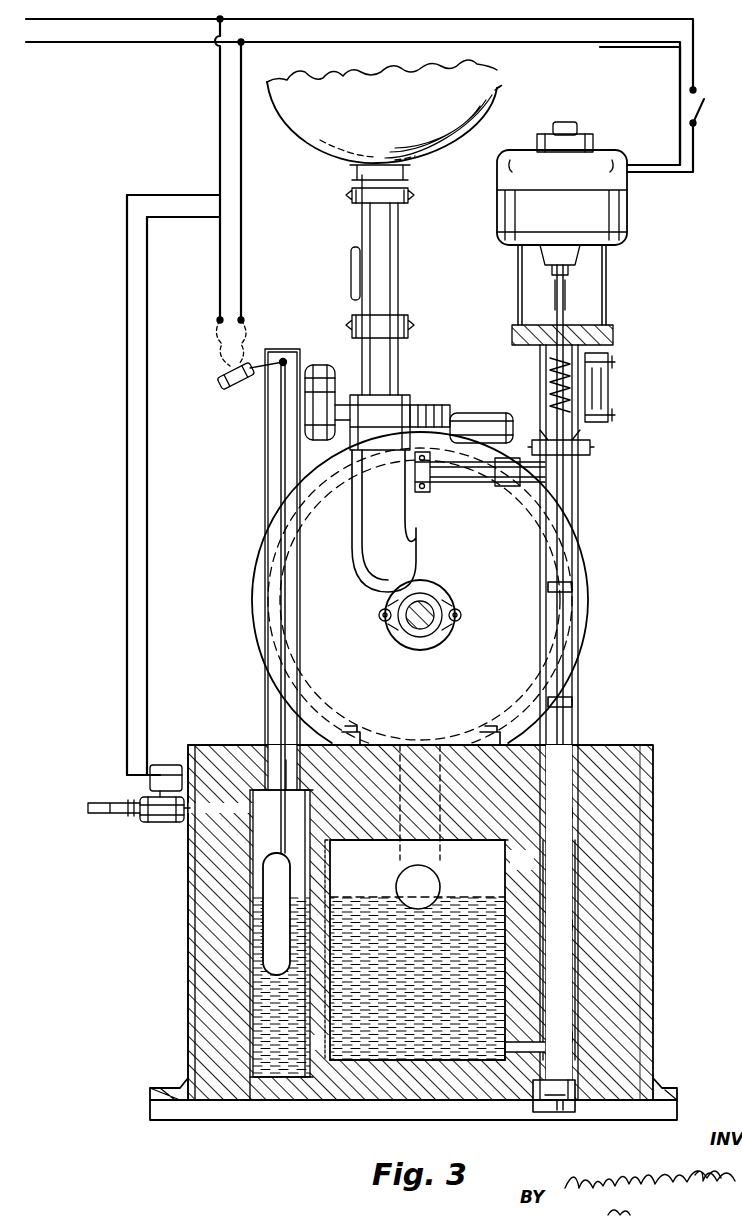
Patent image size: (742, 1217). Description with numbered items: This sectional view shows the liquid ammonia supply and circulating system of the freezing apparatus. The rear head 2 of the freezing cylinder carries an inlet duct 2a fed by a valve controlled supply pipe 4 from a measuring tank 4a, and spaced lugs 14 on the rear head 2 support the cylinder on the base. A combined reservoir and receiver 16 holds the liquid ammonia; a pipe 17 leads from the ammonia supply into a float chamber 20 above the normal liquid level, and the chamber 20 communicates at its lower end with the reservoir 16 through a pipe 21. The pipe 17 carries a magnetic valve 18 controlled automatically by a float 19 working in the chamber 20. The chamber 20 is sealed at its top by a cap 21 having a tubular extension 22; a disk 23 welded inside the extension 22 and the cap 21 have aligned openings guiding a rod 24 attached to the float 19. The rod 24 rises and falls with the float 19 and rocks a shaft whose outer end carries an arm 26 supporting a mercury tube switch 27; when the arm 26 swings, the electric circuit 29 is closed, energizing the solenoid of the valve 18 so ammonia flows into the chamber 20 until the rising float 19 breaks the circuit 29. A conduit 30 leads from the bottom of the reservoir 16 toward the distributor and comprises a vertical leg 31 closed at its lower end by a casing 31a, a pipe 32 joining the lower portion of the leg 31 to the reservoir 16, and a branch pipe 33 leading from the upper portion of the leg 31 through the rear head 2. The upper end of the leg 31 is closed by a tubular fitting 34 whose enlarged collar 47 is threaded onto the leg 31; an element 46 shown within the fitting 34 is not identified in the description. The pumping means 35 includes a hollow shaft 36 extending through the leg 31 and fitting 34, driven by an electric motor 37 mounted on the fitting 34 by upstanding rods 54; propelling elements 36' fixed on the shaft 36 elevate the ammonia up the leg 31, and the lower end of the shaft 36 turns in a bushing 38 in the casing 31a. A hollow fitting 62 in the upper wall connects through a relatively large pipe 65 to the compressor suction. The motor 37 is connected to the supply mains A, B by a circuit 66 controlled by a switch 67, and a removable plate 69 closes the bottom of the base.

The supply main B is at (71, 17).
The supply main A is at (60, 50).
The measuring tank 4a is at (324, 140).
The circuit 66 is at (640, 106).
The switch 67 is at (675, 130).
The electric motor 37 is at (630, 206).
The up-standing rods 54 is at (517, 291).
The arm 26 is at (243, 350).
The mercury tube switch 27 is at (228, 382).
The supply pipe 4 is at (330, 406).
The hollow fitting 62 is at (440, 405).
The pipe 65 is at (482, 413).
The tubular fitting 34 is at (563, 712).
The spring 46 is at (547, 397).
The enlarged collar 47 is at (592, 445).
The branch pipe 33 is at (488, 482).
The inlet duct 2a is at (382, 565).
The rear head 2 is at (390, 657).
The electric circuit 29 is at (147, 537).
The conduit 30 is at (597, 706).
The tubular extension 22 is at (278, 688).
The rod 24 is at (268, 702).
The cap 21 is at (250, 738).
The spaced lugs 14 is at (444, 728).
The pipe 17 is at (110, 816).
The valve 18 is at (156, 822).
The disk 23 is at (364, 796).
The propelling elements 36' is at (619, 809).
The vertical leg 31 is at (578, 822).
The shaft 36 is at (619, 687).
The float 19 is at (270, 878).
The pumping means 35 is at (420, 922).
The float chamber 20 is at (237, 996).
The combined reservoir and receiver 16 is at (372, 1098).
The removable plate 69 is at (468, 1098).
The pipe 32 is at (525, 1078).
The bushing 38 is at (553, 1113).
The casing 31a is at (578, 1122).